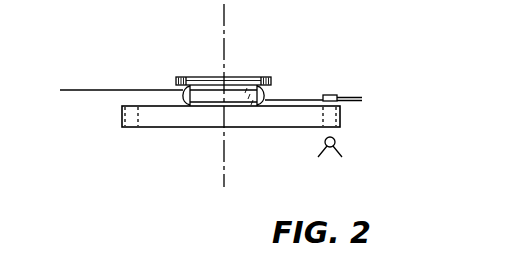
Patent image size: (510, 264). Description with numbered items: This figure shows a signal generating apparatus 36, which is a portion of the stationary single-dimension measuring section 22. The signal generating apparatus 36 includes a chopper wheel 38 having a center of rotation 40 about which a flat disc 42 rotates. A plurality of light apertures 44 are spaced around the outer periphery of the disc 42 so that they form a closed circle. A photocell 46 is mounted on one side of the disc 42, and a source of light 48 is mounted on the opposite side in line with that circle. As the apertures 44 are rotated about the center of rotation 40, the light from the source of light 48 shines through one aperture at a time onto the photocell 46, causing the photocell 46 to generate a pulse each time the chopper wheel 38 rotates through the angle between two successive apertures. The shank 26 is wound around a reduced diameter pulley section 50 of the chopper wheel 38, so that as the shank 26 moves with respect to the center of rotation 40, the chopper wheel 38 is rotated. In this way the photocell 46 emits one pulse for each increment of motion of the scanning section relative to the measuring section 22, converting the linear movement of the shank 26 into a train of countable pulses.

The stationary single-dimension measuring section 22 is at (101, 115).
The shank 26 is at (122, 89).
The signal generating apparatus 36 is at (372, 76).
The chopper wheel 38 is at (199, 78).
The center of rotation 40 is at (228, 74).
The flat disc 42 is at (285, 120).
The light apertures 44 is at (132, 128).
The photocell 46 is at (338, 94).
The source of light 48 is at (335, 141).
The reduced diameter pulley section 50 is at (273, 89).